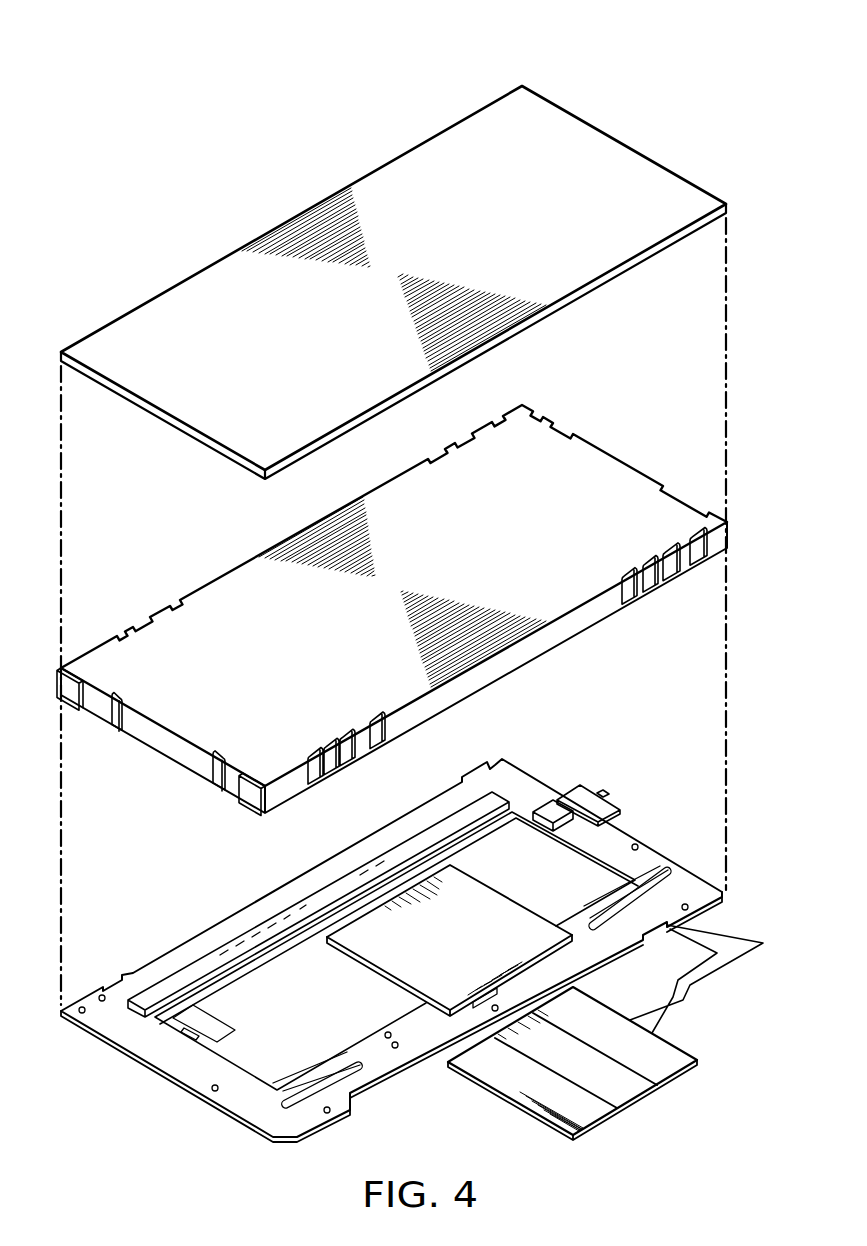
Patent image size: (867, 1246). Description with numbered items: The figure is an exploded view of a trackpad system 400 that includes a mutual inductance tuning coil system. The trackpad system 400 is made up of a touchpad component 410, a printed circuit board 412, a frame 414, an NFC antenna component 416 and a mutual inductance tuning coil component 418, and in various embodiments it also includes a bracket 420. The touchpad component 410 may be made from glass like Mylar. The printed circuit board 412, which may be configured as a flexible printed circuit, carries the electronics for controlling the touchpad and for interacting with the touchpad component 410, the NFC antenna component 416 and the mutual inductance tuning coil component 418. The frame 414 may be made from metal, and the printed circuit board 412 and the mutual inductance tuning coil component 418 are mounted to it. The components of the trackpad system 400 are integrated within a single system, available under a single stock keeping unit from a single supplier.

The trackpad system 400 is at (276, 88).
The touchpad component 410 is at (625, 143).
The printed circuit board 412 is at (627, 462).
The frame 414 is at (646, 836).
The NFC antenna component 416 is at (633, 1102).
The mutual inductance tuning coil component 418 is at (380, 966).
The bracket 420 is at (580, 790).